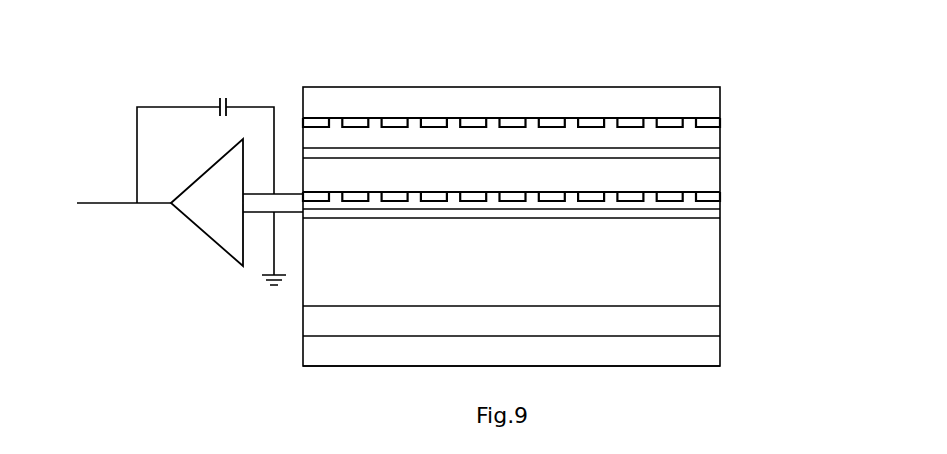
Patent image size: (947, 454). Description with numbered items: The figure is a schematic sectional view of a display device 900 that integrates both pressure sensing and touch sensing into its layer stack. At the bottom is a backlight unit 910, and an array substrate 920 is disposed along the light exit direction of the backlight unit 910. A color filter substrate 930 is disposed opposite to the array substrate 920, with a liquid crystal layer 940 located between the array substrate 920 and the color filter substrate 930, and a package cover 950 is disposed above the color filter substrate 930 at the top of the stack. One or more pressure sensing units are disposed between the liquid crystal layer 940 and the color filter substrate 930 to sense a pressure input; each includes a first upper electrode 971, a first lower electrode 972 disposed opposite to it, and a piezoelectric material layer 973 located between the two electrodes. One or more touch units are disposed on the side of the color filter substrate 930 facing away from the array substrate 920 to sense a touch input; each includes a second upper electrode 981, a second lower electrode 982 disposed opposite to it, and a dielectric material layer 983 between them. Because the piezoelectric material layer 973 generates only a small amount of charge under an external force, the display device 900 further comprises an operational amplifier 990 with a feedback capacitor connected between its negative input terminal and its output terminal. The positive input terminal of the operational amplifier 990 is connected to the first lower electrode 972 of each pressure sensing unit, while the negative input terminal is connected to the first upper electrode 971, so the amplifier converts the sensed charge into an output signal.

The display device 900 is at (298, 49).
The backlight unit 910 is at (511, 353).
The array substrate 920 is at (511, 323).
The color filter substrate 930 is at (511, 178).
The liquid crystal layer 940 is at (511, 280).
The package cover 950 is at (511, 105).
The first upper electrode 971 is at (707, 197).
The first lower electrode 972 is at (707, 213).
The piezoelectric material layer 973 is at (707, 205).
The second upper electrode 981 is at (707, 122).
The second lower electrode 982 is at (707, 154).
The dielectric material layer 983 is at (707, 141).
The operational amplifier 990 is at (164, 178).